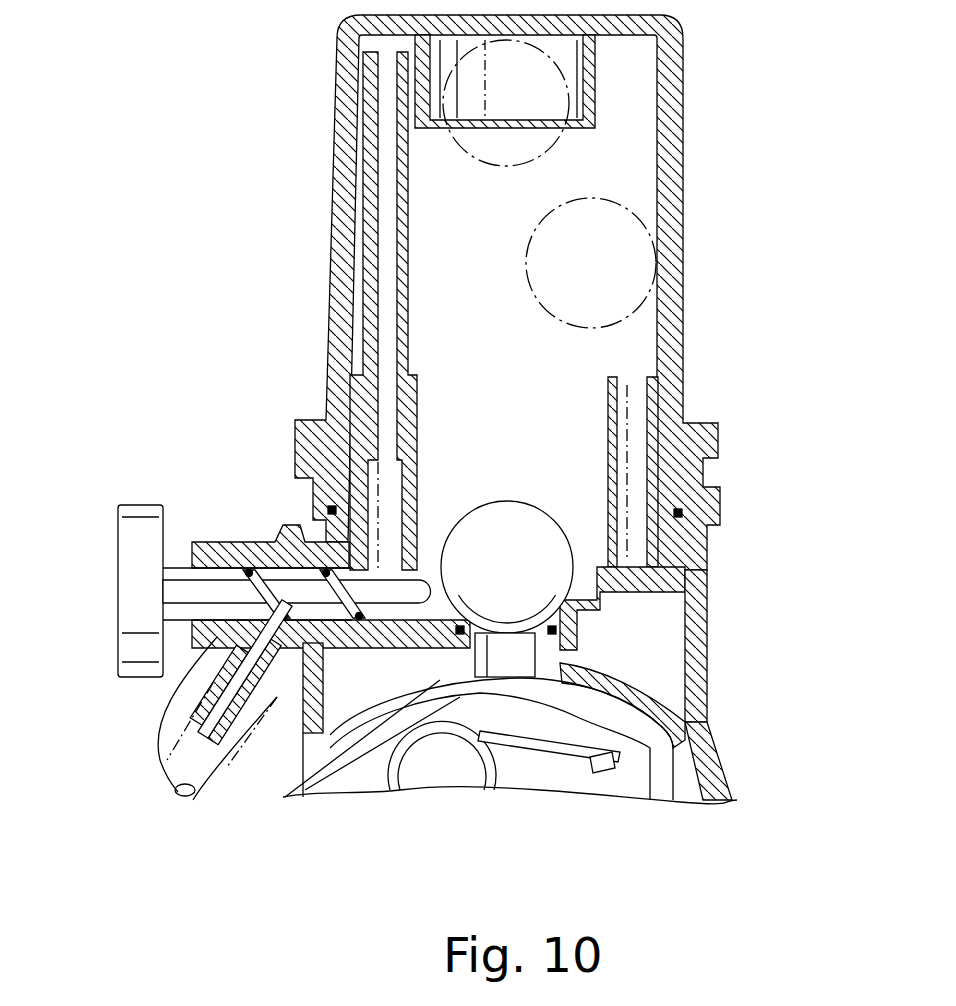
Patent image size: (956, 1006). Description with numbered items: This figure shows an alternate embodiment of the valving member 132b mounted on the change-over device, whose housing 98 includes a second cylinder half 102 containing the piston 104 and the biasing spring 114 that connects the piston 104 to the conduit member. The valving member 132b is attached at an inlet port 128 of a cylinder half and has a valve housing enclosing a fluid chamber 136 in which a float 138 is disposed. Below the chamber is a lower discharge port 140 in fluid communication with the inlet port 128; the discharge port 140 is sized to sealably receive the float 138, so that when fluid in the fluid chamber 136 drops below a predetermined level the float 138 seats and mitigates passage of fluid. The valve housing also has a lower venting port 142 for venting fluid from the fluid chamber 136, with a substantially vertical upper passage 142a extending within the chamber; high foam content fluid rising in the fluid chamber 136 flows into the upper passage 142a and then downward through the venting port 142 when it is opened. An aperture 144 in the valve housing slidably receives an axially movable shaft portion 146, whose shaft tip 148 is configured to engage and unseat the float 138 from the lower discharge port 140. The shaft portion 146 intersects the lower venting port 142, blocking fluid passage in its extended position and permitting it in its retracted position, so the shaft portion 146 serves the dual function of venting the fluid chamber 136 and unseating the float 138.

The valving member 132b is at (712, 68).
The fluid chamber 136 is at (446, 262).
The upper passage 142a is at (392, 129).
The aperture 144 is at (181, 630).
The shaft portion 146 is at (188, 588).
The shaft tip 148 is at (418, 578).
The lower venting port 142 is at (188, 795).
The lower discharge port 140 is at (578, 597).
The float 138 is at (486, 530).
The inlet port 128 is at (519, 660).
The housing 98 is at (700, 745).
The second cylinder half 102 is at (713, 786).
The piston 104 is at (622, 785).
The biasing spring 114 is at (500, 772).